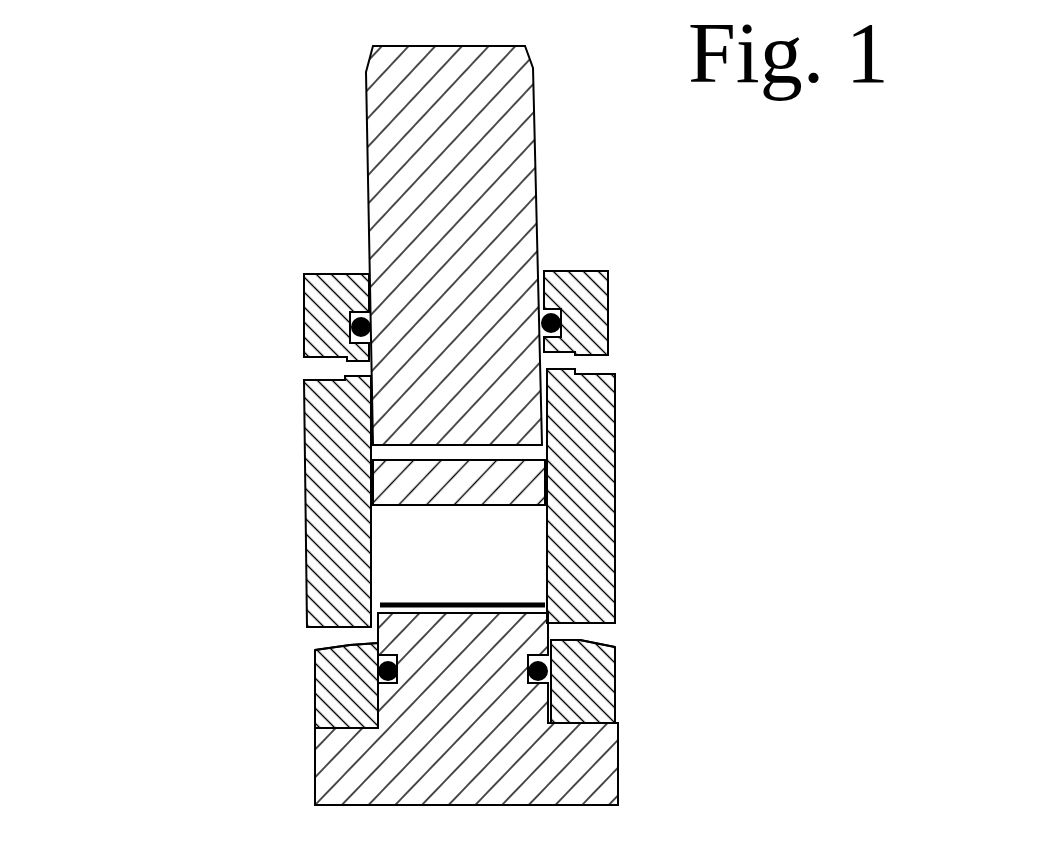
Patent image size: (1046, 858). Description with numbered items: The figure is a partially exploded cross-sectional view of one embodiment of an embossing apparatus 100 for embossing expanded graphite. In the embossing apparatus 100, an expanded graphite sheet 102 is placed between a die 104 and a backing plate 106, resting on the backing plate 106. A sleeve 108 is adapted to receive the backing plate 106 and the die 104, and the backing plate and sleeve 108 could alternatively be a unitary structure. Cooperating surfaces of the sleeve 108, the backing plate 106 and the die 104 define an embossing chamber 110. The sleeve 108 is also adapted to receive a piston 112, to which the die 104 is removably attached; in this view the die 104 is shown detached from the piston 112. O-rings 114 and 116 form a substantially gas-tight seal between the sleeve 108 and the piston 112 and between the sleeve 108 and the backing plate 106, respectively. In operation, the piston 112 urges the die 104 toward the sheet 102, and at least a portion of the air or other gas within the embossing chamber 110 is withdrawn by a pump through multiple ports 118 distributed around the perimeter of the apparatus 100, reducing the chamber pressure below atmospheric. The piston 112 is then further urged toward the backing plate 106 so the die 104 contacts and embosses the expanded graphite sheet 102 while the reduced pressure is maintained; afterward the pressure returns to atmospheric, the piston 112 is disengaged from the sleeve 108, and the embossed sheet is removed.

The embossing apparatus 100 is at (136, 179).
The expanded graphite sheet 102 is at (380, 604).
The die 104 is at (492, 483).
The backing plate 106 is at (316, 772).
The sleeve 108 is at (307, 492).
The embossing chamber 110 is at (489, 567).
The piston 112 is at (366, 213).
The O-ring 114 is at (351, 321).
The O-ring 116 is at (377, 679).
The ports 118 is at (318, 377).